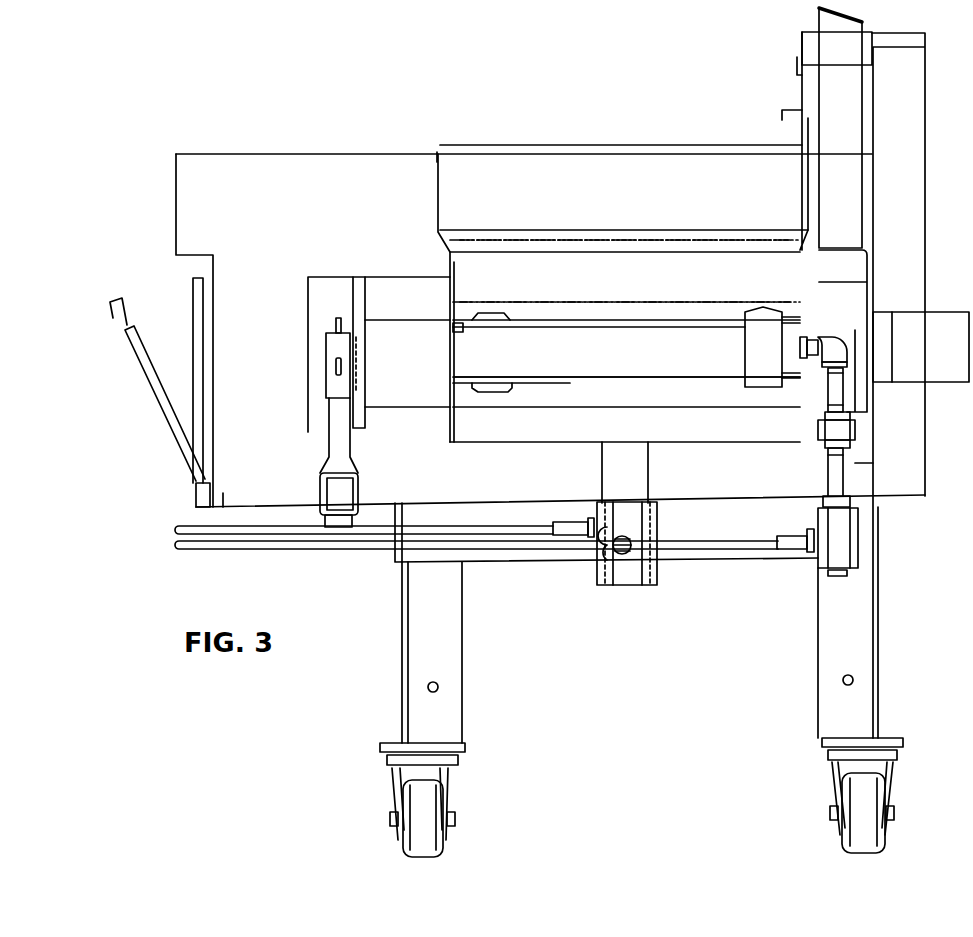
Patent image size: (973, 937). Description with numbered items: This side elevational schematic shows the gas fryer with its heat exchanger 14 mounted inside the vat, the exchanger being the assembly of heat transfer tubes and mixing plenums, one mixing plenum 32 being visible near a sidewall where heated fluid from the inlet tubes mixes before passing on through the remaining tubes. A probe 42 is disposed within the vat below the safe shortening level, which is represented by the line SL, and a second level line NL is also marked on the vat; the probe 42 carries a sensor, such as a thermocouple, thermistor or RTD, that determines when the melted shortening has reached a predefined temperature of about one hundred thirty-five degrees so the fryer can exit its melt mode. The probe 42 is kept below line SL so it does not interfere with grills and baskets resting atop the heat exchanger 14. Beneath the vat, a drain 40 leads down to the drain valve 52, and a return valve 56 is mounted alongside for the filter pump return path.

The heat exchanger 14 is at (571, 382).
The mixing plenum 32 is at (760, 373).
The drain 40 is at (648, 460).
The probe 42 is at (462, 331).
The drain valve 52 is at (666, 516).
The return valve 56 is at (850, 526).
The nip line NL is at (620, 238).
The safe shortening level line SL is at (632, 300).